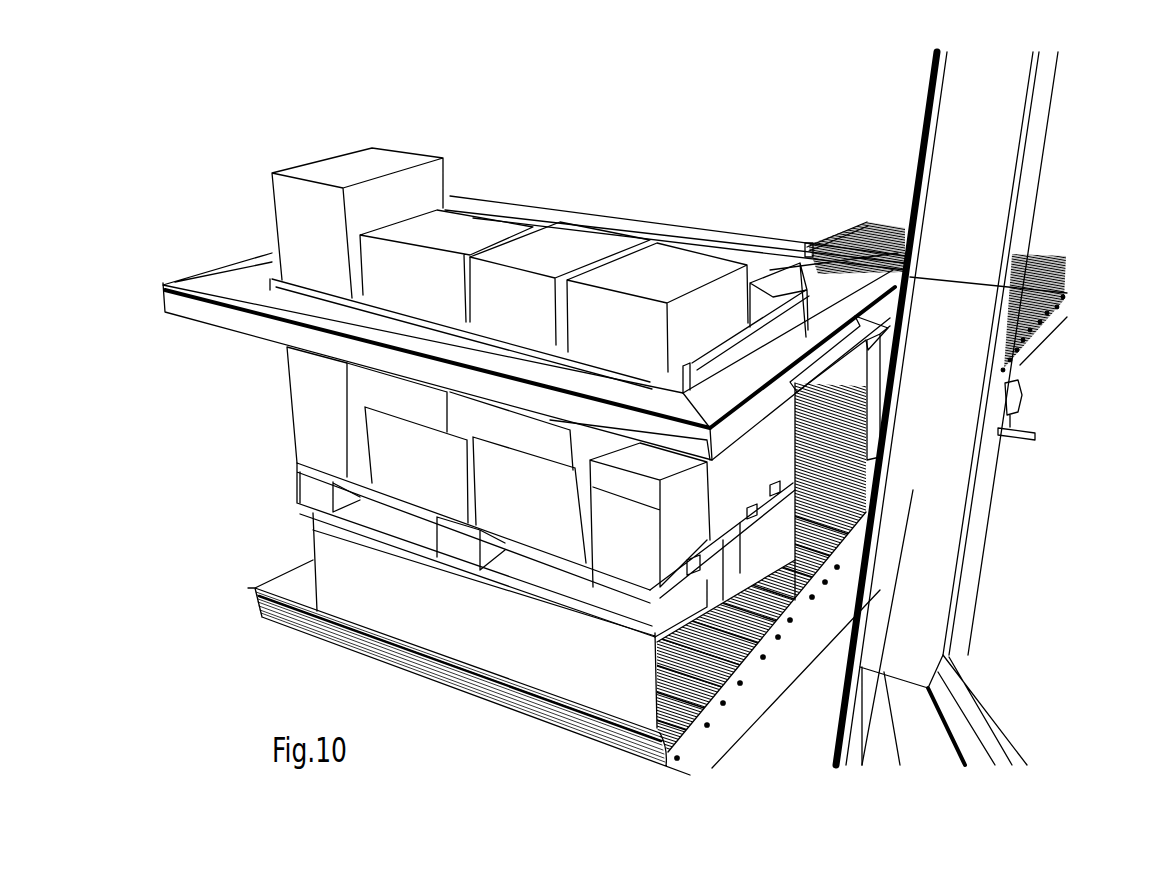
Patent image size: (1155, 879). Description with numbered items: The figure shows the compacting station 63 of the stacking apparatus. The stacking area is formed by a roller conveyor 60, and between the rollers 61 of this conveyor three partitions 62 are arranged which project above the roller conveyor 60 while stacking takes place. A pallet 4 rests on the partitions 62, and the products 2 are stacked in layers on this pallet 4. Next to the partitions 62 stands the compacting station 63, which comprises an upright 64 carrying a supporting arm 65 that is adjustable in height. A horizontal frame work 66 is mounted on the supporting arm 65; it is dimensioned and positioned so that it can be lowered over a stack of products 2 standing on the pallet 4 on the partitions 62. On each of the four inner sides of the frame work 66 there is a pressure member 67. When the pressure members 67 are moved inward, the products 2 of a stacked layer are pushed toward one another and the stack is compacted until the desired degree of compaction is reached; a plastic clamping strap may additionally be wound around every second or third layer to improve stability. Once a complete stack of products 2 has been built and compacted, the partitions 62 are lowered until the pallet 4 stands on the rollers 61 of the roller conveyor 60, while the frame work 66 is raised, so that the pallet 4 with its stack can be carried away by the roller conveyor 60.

The products 2 is at (367, 427).
The pallet 4 is at (307, 483).
The roller conveyor 60 is at (1020, 365).
The rollers 61 is at (318, 603).
The partitions 62 is at (323, 539).
The compacting station 63 is at (997, 173).
The upright 64 is at (1022, 215).
The supporting arm 65 is at (833, 360).
The frame work 66 is at (730, 240).
The pressure member 67 is at (717, 358).